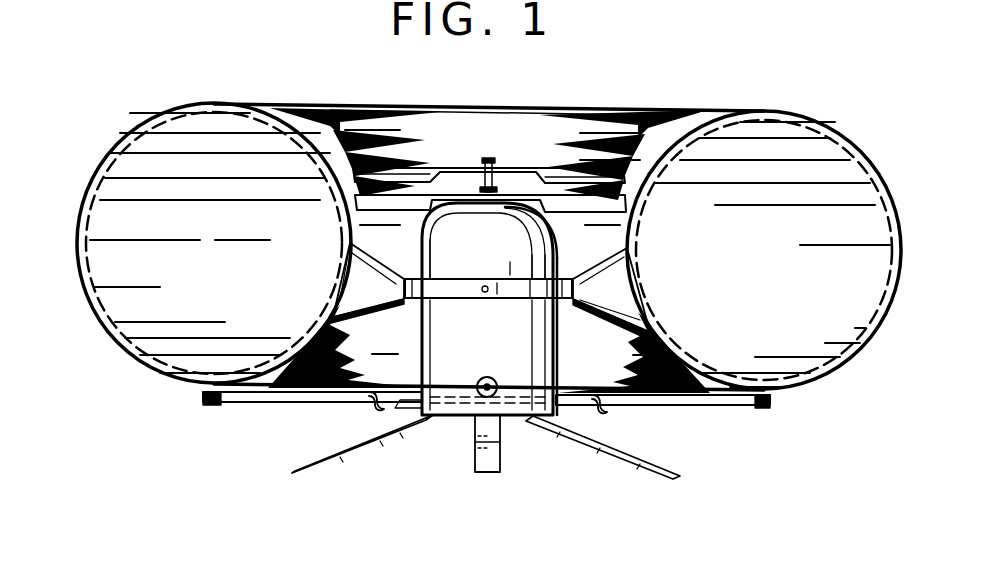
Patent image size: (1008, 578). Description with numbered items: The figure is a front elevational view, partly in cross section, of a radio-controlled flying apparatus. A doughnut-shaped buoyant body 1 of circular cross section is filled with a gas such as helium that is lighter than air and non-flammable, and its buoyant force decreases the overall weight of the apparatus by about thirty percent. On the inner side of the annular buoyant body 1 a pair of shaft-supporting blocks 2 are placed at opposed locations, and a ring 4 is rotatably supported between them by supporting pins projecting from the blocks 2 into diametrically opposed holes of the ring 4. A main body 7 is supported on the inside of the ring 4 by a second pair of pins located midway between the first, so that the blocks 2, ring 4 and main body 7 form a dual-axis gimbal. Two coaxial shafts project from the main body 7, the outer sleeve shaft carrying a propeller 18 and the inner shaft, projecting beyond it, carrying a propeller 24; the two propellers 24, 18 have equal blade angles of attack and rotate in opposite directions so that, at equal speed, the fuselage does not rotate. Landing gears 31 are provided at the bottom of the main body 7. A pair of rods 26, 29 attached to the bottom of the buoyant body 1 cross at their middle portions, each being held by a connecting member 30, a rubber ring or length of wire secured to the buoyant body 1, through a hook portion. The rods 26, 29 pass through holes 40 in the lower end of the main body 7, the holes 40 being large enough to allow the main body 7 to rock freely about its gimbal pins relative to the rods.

The buoyant body 1 is at (833, 128).
The shaft-supporting blocks 2 is at (352, 319).
The ring 4 is at (460, 279).
The main body 7 is at (557, 247).
The propeller 18 is at (526, 203).
The propeller 24 is at (417, 165).
The rod 26 is at (500, 404).
The rod 29 is at (400, 398).
The connecting member 30 is at (282, 398).
The landing gears 31 is at (350, 462).
The holes 40 is at (485, 378).